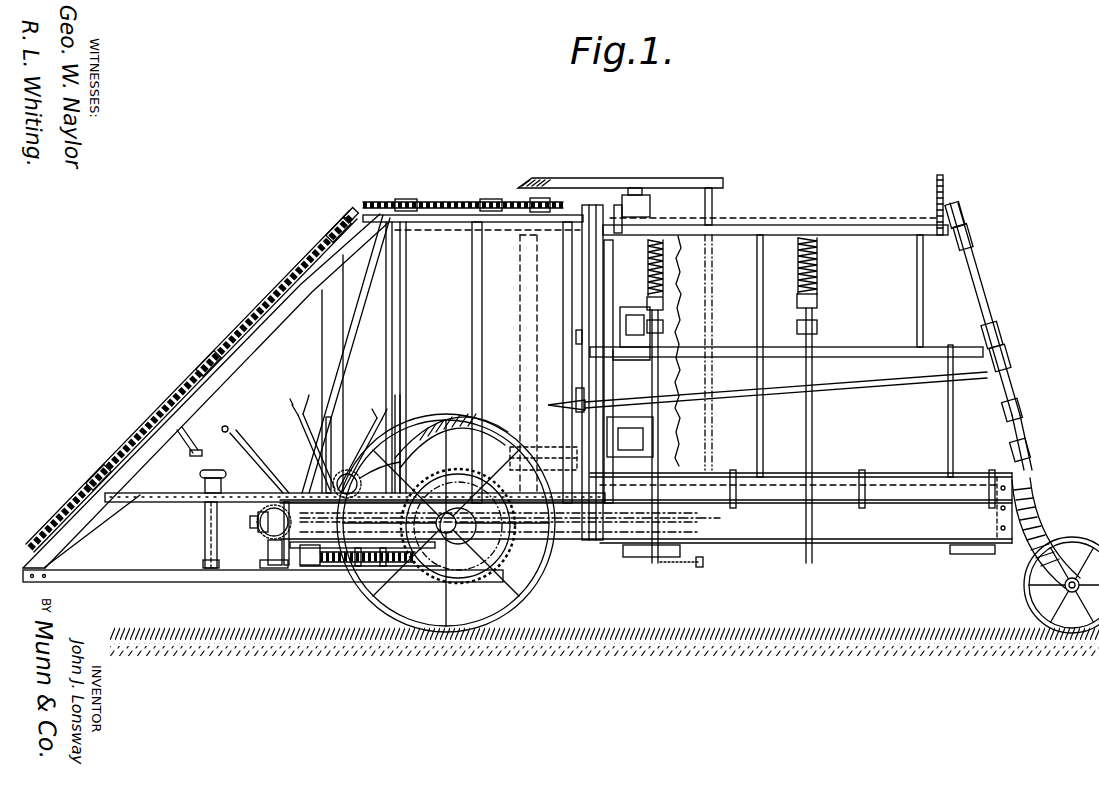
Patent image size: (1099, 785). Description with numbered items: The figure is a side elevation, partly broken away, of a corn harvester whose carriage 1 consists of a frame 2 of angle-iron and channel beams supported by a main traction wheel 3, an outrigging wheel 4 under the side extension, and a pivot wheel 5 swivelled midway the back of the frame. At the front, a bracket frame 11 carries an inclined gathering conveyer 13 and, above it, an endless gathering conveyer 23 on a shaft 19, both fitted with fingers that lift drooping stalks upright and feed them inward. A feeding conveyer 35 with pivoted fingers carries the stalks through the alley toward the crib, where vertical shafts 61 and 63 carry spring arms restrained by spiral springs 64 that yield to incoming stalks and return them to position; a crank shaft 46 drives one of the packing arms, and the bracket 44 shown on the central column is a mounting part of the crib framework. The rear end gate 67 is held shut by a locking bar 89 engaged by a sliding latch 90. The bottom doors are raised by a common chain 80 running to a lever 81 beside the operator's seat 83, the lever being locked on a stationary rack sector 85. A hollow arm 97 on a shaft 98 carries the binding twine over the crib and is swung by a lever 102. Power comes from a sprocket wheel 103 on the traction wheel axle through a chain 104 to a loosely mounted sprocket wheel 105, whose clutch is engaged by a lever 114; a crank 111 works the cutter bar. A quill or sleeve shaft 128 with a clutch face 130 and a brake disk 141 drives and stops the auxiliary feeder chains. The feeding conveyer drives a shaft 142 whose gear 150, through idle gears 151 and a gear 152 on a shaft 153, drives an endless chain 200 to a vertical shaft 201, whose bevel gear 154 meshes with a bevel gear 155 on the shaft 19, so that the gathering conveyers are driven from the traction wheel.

The carriage 1 is at (938, 542).
The frame 2 is at (892, 542).
The main traction wheel 3 is at (553, 572).
The outrigging wheel 4 is at (360, 598).
The pivot wheel 5 is at (1024, 585).
The bracket frame 11 is at (140, 572).
The gathering conveyer 13 is at (88, 512).
The shaft 19 is at (180, 440).
The endless gathering conveyer 23 is at (250, 318).
The feeding conveyer 35 is at (460, 208).
The bearing bracket 44 is at (634, 308).
The crank shaft 46 is at (612, 282).
The vertical shaft 61 is at (686, 440).
The vertical shaft 63 is at (815, 432).
The spiral spring 64 is at (666, 272).
The end gate 67 is at (978, 300).
The common chain 80 is at (450, 540).
The lever 81 is at (401, 410).
The operator's seat 83 is at (450, 428).
The stationary rack sector 85 is at (349, 474).
The locking bar 89 is at (905, 385).
The latch 90 is at (570, 412).
The hollow arm 97 is at (648, 186).
The shaft 98 is at (713, 210).
The lever 102 is at (303, 402).
The sprocket wheel 103 is at (490, 560).
The chain 104 is at (458, 468).
The sprocket wheel 105 is at (263, 530).
The crank 111 is at (268, 548).
The lever 114 is at (331, 432).
The quill or sleeve shaft 128 is at (534, 296).
The clutch face 130 is at (548, 452).
The brake disk 141 is at (508, 234).
The shaft 142 is at (400, 305).
The gear 150 is at (386, 568).
The idle gear 151 is at (372, 568).
The gear 152 is at (350, 568).
The shaft 153 is at (330, 562).
The bevel gear 154 is at (222, 470).
The bevel gear 155 is at (229, 432).
The endless chain 200 is at (283, 492).
The vertical shaft 201 is at (218, 527).